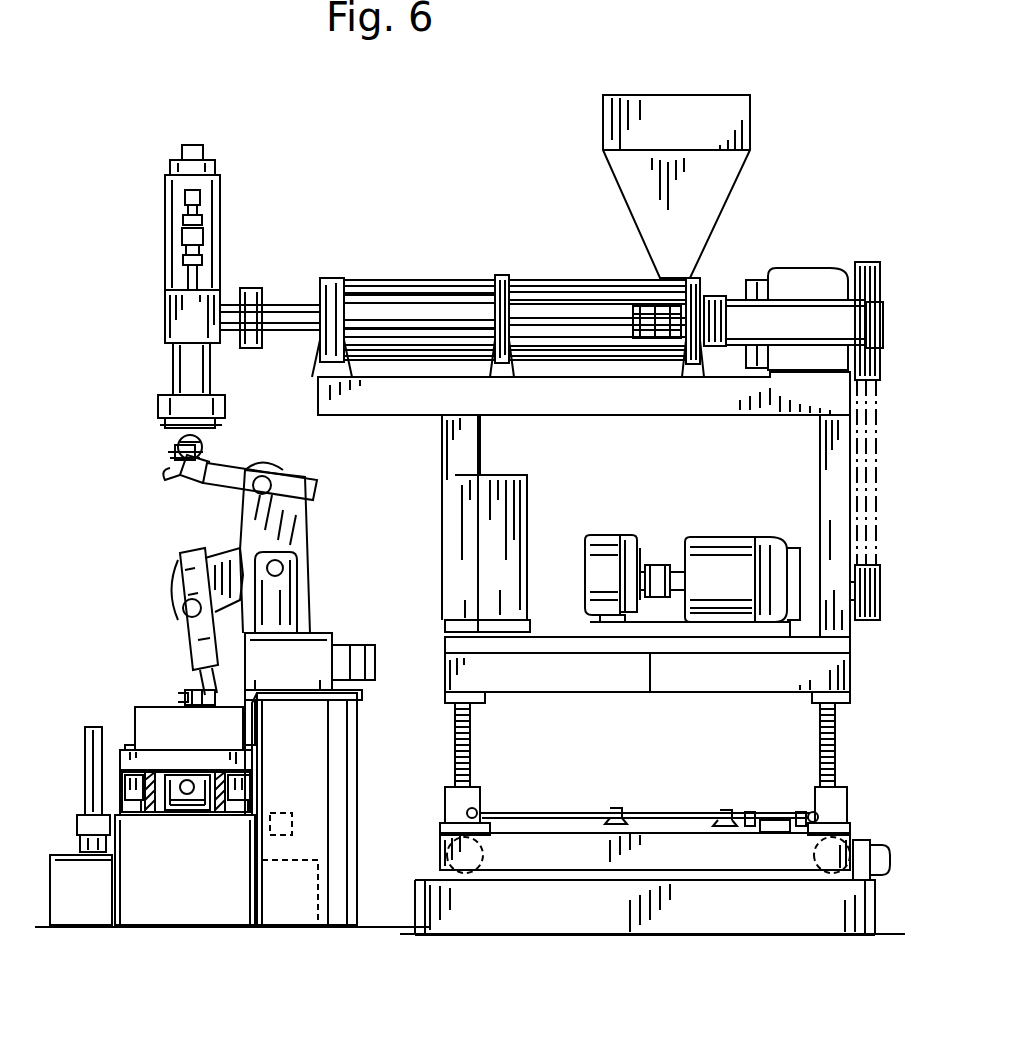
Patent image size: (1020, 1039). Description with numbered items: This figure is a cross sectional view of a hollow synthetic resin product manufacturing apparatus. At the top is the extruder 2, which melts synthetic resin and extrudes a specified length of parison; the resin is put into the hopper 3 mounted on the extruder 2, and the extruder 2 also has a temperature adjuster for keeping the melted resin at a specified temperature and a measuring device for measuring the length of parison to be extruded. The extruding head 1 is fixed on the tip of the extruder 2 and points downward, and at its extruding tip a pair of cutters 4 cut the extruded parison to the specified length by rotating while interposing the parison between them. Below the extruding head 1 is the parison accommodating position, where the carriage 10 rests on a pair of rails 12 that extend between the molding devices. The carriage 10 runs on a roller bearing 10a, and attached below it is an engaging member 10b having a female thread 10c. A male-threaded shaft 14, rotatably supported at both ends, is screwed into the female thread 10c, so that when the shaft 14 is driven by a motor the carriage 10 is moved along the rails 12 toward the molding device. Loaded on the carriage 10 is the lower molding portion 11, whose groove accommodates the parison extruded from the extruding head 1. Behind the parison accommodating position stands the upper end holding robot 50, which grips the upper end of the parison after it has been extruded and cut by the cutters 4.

The extruding head 1 is at (175, 375).
The extruder 2 is at (456, 260).
The hopper 3 is at (720, 178).
The cutters 4 is at (236, 412).
The upper end holding robot 50 is at (320, 585).
The carriage 10 is at (125, 757).
The roller bearing 10a is at (130, 790).
The engaging member 10b is at (140, 746).
The female thread 10c is at (185, 780).
The lower molding portion 11 is at (150, 705).
The rails 12 is at (240, 815).
The male-threaded shaft 14 is at (188, 782).